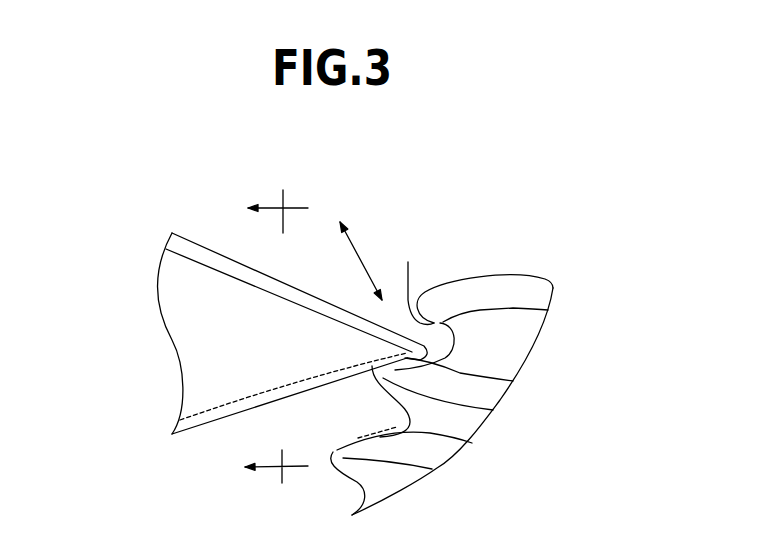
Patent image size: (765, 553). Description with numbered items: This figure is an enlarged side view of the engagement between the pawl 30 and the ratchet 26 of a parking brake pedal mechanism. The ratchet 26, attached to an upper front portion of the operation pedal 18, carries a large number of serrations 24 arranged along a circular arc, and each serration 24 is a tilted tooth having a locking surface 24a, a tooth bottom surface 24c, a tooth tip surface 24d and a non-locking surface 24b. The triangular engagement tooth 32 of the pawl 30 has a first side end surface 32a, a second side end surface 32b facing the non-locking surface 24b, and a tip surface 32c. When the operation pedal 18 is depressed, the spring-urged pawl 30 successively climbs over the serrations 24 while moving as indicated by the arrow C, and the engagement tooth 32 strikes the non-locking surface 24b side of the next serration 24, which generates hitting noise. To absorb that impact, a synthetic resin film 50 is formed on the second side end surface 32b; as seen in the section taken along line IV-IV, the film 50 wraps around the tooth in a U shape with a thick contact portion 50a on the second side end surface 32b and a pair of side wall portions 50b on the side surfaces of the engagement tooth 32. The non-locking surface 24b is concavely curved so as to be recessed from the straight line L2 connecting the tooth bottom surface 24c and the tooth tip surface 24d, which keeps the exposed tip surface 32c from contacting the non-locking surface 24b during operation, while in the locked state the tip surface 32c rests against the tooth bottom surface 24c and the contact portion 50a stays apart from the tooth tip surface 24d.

The operation pedal 18 is at (580, 280).
The serration 24 is at (493, 410).
The locking surface 24a is at (408, 262).
The non-locking surface 24b is at (472, 443).
The tooth bottom surface 24c is at (548, 310).
The tooth tip surface 24d is at (337, 450).
The ratchet 26 is at (390, 482).
The pawl 30 is at (143, 218).
The engagement tooth 32 is at (195, 445).
The first side end surface 32a is at (328, 298).
The second side end surface 32b is at (230, 404).
The tip surface 32c is at (513, 381).
The synthetic resin film 50 is at (173, 370).
The contact portion 50a is at (300, 392).
The side wall portion 50b is at (185, 323).
The straight line L2 is at (452, 348).
The arrow C is at (361, 261).
The line IV- IV is at (275, 337).